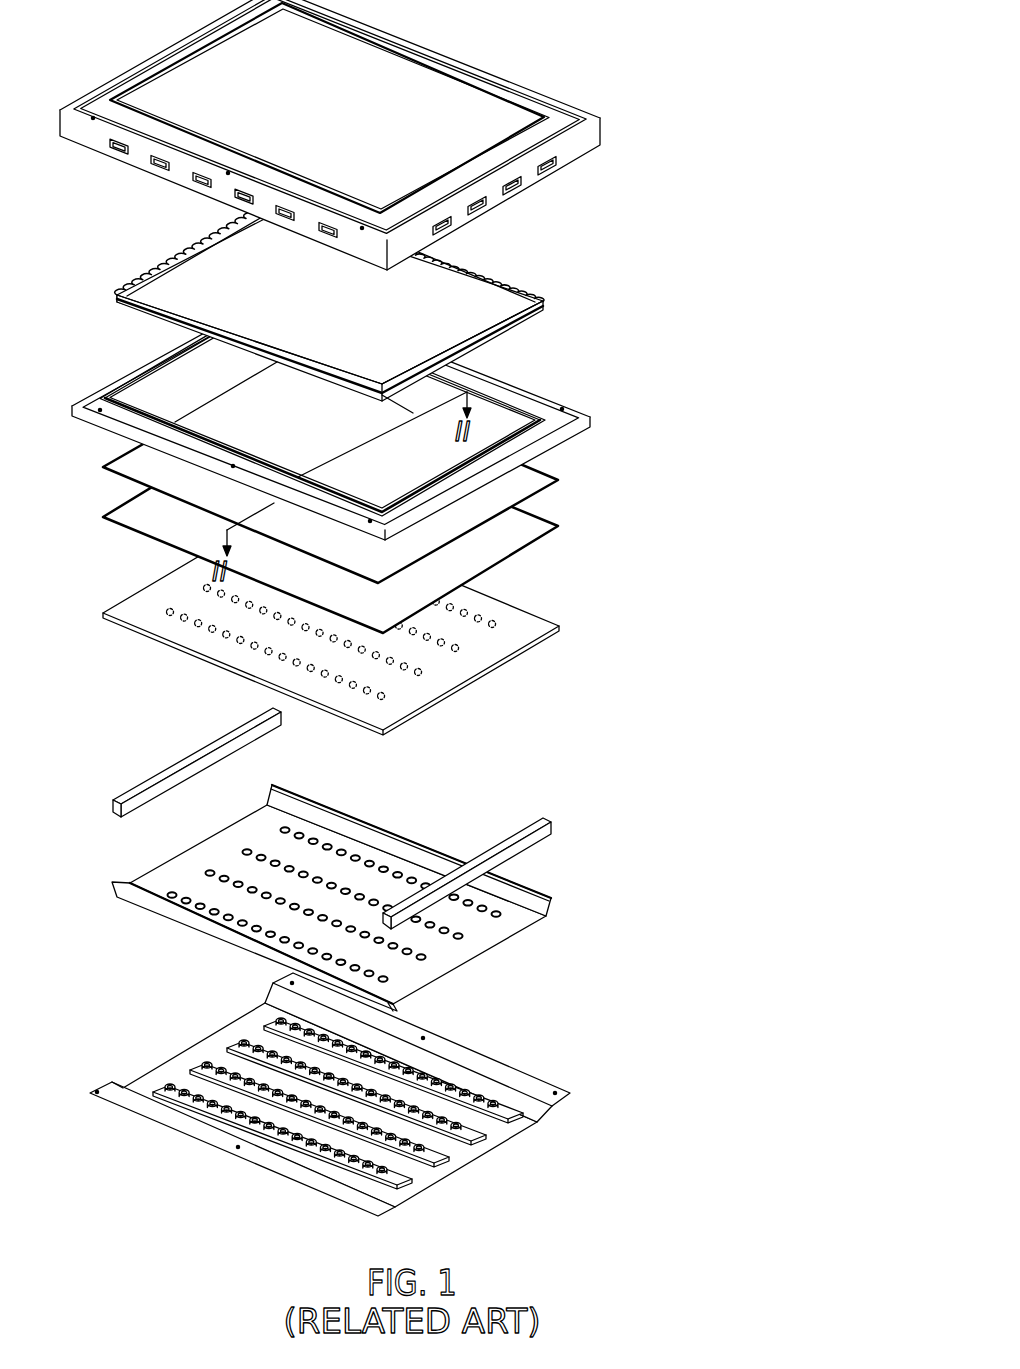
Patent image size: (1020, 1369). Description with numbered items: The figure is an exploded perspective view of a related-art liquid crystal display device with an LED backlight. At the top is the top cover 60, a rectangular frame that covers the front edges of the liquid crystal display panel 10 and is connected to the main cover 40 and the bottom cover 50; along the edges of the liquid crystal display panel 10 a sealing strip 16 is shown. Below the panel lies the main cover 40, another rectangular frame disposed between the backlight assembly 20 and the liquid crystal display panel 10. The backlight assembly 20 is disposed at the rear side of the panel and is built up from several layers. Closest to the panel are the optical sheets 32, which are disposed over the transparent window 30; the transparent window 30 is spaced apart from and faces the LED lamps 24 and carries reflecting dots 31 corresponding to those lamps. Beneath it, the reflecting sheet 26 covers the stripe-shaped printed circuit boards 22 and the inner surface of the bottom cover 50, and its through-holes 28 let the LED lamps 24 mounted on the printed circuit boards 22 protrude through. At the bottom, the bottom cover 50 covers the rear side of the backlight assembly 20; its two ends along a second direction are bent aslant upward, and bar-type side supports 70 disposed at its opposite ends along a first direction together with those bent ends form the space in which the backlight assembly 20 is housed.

The liquid crystal display panel 10 is at (462, 300).
The sealant 16 is at (440, 256).
The backlight assembly 20 is at (647, 527).
The printed circuit boards 22 is at (503, 1117).
The LED lamps 24 is at (473, 1100).
The reflecting sheet 26 is at (477, 947).
The through-holes 28 is at (495, 912).
The transparent window 30 is at (532, 656).
The reflecting dots 31 is at (456, 652).
The optical sheets 32 is at (579, 476).
The main cover 40 is at (580, 413).
The bottom cover 50 is at (552, 1113).
The top cover 60 is at (598, 132).
The bar-type side supports 70 is at (267, 730).